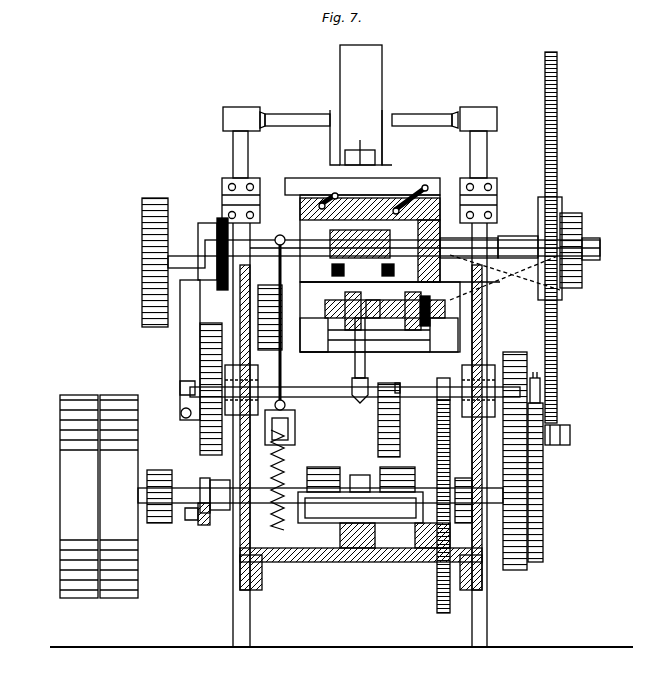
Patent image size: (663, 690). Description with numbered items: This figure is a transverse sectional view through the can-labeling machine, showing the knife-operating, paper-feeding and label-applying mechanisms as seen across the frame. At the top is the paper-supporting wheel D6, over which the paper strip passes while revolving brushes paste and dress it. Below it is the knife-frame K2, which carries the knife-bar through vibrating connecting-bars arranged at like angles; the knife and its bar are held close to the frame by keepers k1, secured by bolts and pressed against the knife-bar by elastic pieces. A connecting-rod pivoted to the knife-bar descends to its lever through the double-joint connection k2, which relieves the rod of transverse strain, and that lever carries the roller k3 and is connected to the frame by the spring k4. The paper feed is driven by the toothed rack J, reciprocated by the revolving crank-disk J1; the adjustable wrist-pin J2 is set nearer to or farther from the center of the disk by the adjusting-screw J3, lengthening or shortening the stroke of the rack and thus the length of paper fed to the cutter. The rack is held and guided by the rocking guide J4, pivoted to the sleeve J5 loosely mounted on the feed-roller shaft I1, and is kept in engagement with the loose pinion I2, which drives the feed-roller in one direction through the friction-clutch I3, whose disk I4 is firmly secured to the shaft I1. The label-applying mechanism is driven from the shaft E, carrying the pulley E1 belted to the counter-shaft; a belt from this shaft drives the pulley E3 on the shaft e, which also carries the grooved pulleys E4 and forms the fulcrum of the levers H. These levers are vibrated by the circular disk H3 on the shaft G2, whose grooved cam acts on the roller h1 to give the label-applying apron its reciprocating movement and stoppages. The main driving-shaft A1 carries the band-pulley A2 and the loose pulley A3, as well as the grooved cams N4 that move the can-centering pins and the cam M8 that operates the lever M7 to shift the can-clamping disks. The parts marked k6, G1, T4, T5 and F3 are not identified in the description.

The paper-supporting wheel D6 is at (361, 105).
The toothed rack J is at (558, 100).
The crank-disk J1 is at (543, 480).
The adjustable wrist-pin J2 is at (570, 432).
The adjusting-screw J3 is at (532, 379).
The rocking guide J4 is at (560, 200).
The bearing or sleeve J5 is at (508, 238).
The feed-roller shaft I1 is at (528, 238).
The loose gear-pinion I2 is at (505, 277).
The friction-clutch I3 is at (580, 232).
The clutch disk I4 is at (598, 240).
The knife-frame K2 is at (362, 230).
The keepers k1 is at (283, 200).
The double-joint connection k2 is at (290, 428).
The roller k3 is at (451, 408).
The spring k4 is at (458, 478).
The pedestal block k6 is at (471, 200).
The driving-shaft of the label-applying mechanism E is at (440, 312).
The pulley E1 is at (408, 305).
The pulley E3 is at (378, 299).
The grooved pulleys E4 is at (343, 306).
The shaft e is at (429, 307).
The levers H is at (370, 345).
The circular disk H3 is at (400, 410).
The roller h1 is at (395, 387).
The rack G1 is at (432, 448).
The shaft G2 is at (355, 391).
The main driving-shaft A1 is at (190, 503).
The band-pulley A2 is at (119, 496).
The loose pulley A3 is at (79, 496).
The bearing T4 is at (205, 525).
The collar T5 is at (202, 480).
The grooved cams N4 is at (363, 471).
The cam M8 is at (360, 472).
The lever M7 is at (360, 548).
The bearing F3 is at (420, 548).